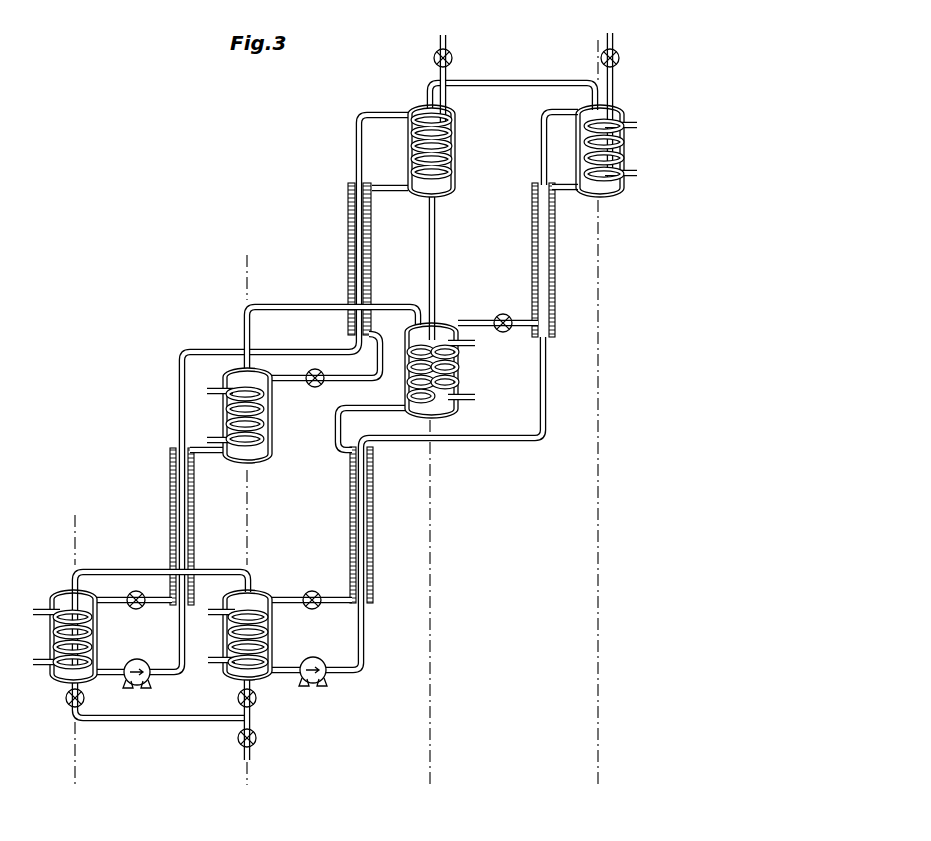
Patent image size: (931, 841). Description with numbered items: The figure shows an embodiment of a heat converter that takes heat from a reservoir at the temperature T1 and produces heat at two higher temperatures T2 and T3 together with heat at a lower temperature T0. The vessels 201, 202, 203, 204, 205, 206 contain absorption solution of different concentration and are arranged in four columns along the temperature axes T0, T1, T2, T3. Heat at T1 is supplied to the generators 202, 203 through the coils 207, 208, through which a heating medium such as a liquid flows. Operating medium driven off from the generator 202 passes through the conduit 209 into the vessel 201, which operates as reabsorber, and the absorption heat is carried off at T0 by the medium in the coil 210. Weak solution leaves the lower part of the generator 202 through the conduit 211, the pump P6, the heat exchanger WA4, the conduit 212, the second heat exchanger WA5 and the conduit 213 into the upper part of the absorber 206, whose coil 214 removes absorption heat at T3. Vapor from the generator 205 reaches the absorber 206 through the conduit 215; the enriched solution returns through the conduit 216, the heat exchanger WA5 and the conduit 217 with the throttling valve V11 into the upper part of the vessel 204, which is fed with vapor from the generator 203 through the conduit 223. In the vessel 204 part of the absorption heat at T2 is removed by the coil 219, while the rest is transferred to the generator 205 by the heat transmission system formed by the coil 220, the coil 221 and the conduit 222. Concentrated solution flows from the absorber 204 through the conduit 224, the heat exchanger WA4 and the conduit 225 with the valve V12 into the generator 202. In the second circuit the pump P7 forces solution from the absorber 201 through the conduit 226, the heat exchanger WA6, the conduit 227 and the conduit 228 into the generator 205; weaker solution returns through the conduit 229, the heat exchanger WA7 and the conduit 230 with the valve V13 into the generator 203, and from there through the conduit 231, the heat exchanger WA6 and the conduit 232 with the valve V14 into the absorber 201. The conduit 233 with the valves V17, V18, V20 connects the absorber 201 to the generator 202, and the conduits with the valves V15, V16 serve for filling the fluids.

The vessel (reabsorber/absorber) 201 is at (58, 596).
The vessel (generator) 202 is at (268, 593).
The vessel (generator) 203 is at (272, 412).
The vessel (absorber) 204 is at (450, 324).
The vessel (generator) 205 is at (455, 125).
The vessel (absorber) 206 is at (621, 111).
The coil 207 is at (265, 632).
The coil 208 is at (240, 421).
The conduit 209 is at (139, 569).
The coil 210 is at (85, 642).
The conduit 211 is at (290, 677).
The conduit 212 is at (508, 442).
The conduit 213 is at (547, 112).
The coil 214 is at (614, 148).
The conduit 215 is at (537, 82).
The conduit 216 is at (567, 192).
The conduit 217 is at (526, 332).
The coil 219 is at (458, 353).
The coil 220 is at (445, 378).
The coil 221 is at (445, 155).
The conduit 222 is at (436, 245).
The conduit 223 is at (315, 306).
The conduit 224 is at (355, 407).
The conduit 225 is at (333, 596).
The conduit 226 is at (184, 634).
The conduit 227 is at (180, 375).
The conduit 228 is at (387, 112).
The conduit 229 is at (385, 186).
The conduit 230 is at (383, 333).
The conduit 231 is at (217, 456).
The conduit 232 is at (155, 591).
The conduit 233 is at (170, 722).
The throttling valve V11 is at (509, 314).
The valve V12 is at (324, 613).
The valve V13 is at (321, 391).
The valve V14 is at (144, 613).
The valve V15 is at (628, 63).
The valve V16 is at (461, 63).
The valve V17 is at (93, 700).
The valve V18 is at (266, 700).
The valve V20 is at (266, 741).
The pump P6 is at (327, 678).
The pump P7 is at (152, 679).
The heat exchanger WA4 is at (385, 525).
The heat exchanger WA5 is at (565, 260).
The heat exchanger WA6 is at (205, 526).
The heat exchanger WA7 is at (385, 259).
The lower temperature T0 is at (75, 665).
The reservoir temperature T1 is at (247, 535).
The higher temperature T2 is at (430, 532).
The higher temperature T3 is at (598, 427).